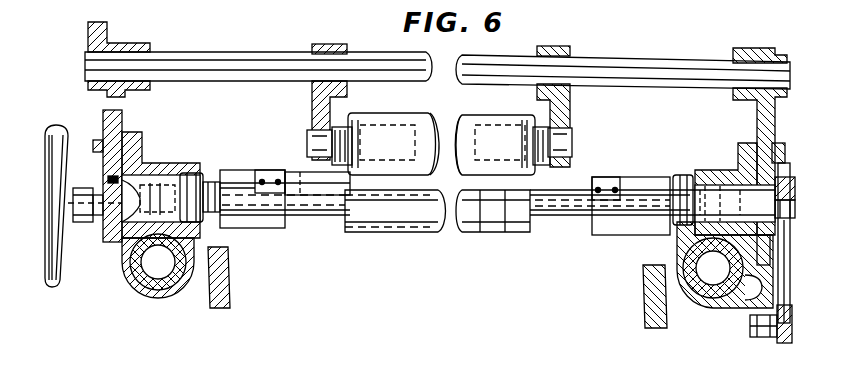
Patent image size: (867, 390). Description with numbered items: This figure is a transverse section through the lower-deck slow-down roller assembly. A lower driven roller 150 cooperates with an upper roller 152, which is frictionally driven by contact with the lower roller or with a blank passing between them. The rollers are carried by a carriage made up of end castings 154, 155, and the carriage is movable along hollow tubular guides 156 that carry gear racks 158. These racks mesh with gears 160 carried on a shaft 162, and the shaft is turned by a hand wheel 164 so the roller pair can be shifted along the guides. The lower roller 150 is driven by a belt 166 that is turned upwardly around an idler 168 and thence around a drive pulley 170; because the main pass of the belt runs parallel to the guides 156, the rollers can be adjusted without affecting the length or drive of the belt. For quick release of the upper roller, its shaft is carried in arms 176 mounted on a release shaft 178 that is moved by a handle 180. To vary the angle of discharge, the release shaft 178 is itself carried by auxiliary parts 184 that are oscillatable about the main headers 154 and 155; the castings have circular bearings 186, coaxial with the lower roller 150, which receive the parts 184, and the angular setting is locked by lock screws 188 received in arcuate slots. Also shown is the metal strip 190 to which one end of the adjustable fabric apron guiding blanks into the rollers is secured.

The lower driven roller 150 is at (415, 232).
The upper roller 152 is at (413, 118).
The end casting 154 is at (748, 295).
The end casting 155 is at (136, 285).
The hollow tubular guide 156 is at (165, 285).
The gear rack 158 is at (188, 226).
The gear 160 is at (172, 165).
The shaft 162 is at (98, 232).
The hand wheel 164 is at (56, 126).
The belt 166 is at (786, 345).
The idler 168 is at (776, 348).
The drive pulley 170 is at (795, 195).
The arm 176 is at (312, 113).
The shaft 178 is at (632, 72).
The handle 180 is at (108, 32).
The auxiliary part 184 is at (122, 128).
The circular bearing 186 is at (110, 178).
The lock screw 188 is at (100, 141).
The metal strip 190 is at (322, 188).